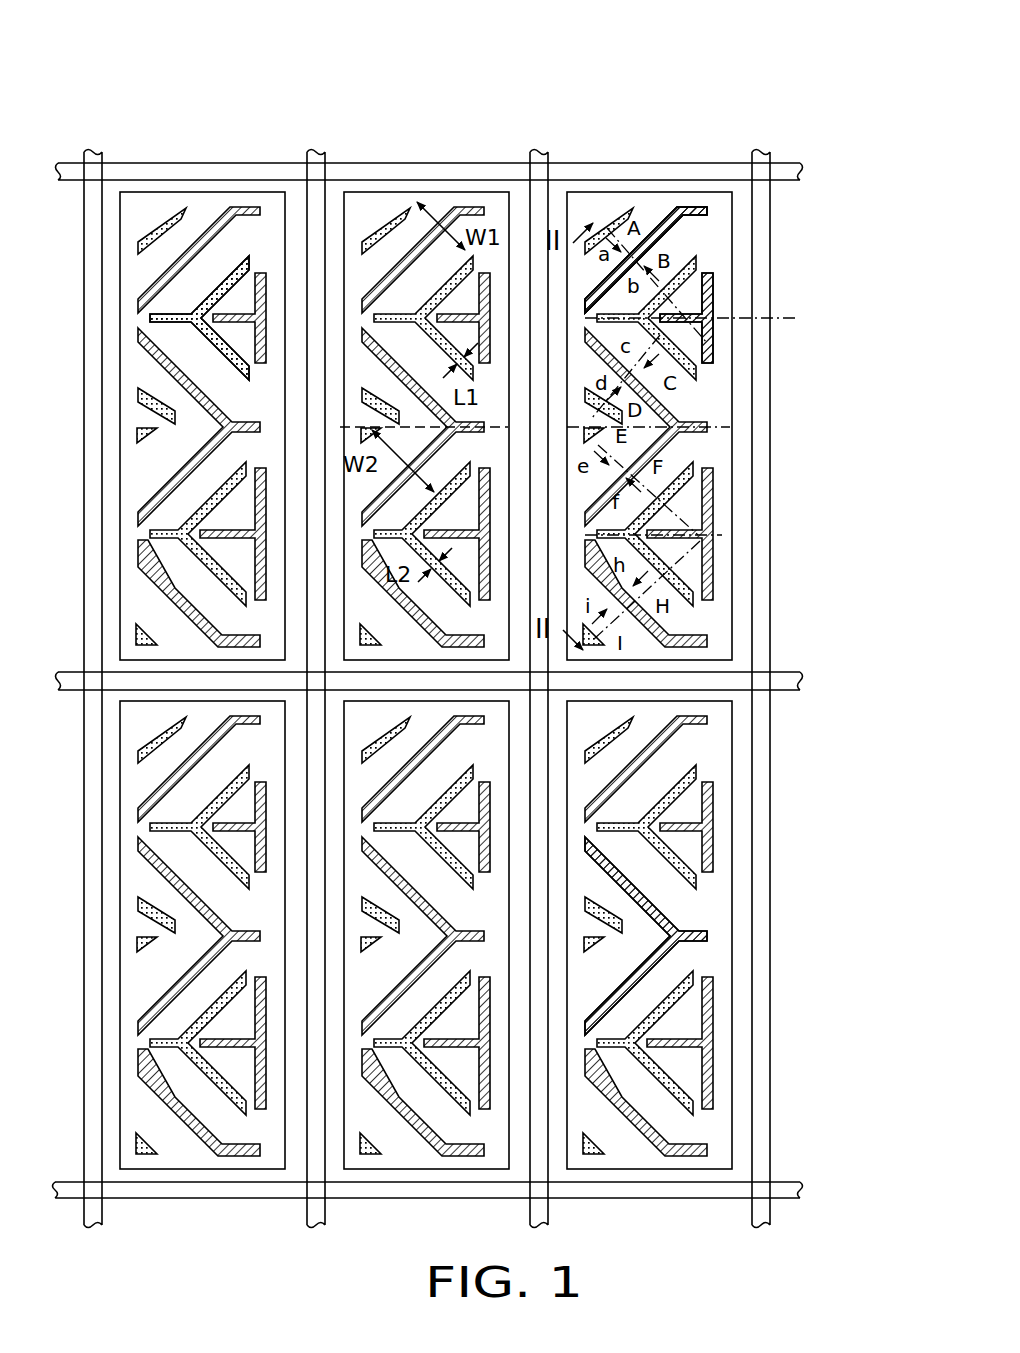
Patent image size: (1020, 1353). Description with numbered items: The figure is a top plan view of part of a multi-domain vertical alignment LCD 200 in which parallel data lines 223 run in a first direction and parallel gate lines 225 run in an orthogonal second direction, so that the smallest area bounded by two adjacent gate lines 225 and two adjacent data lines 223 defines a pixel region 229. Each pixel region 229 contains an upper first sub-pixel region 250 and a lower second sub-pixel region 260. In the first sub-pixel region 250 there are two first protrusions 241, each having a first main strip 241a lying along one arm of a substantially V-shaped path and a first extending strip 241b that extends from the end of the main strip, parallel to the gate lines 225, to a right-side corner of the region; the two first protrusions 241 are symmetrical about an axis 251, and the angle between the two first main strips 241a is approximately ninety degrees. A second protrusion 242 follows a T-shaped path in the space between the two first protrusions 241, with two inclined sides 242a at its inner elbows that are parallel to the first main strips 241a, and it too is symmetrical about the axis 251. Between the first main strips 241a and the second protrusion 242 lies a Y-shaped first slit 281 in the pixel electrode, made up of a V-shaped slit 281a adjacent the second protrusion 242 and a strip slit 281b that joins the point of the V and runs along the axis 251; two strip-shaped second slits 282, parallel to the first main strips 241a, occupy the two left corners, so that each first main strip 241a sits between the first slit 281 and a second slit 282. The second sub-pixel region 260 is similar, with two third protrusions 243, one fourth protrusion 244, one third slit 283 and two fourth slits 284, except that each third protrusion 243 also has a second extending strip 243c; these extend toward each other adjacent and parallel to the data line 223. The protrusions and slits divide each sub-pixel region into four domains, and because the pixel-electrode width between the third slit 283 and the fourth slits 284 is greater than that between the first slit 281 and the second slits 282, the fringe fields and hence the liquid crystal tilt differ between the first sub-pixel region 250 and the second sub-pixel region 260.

The multi-domain vertical alignment LCD 200 is at (418, 48).
The data line 223 is at (317, 152).
The gate line 225 is at (398, 172).
The pixel region 229 is at (850, 345).
The first protrusion 241 is at (760, 77).
The first main strip 241a is at (663, 226).
The first extending strip 241b is at (703, 208).
The second protrusion 242 is at (710, 295).
The inclined side 242a is at (688, 313).
The third protrusion 243 is at (655, 622).
The second extending strip 243c is at (590, 1023).
The fourth protrusion 244 is at (710, 470).
The first sub-pixel region 250 is at (716, 375).
The axis 251 is at (740, 316).
The second sub-pixel region 260 is at (719, 447).
The first slit 281 is at (697, 259).
The V-shaped slit 281a is at (226, 285).
The strip slit 281b is at (150, 313).
The second slit 282 is at (600, 209).
The third slit 283 is at (696, 588).
The fourth slit 284 is at (598, 642).